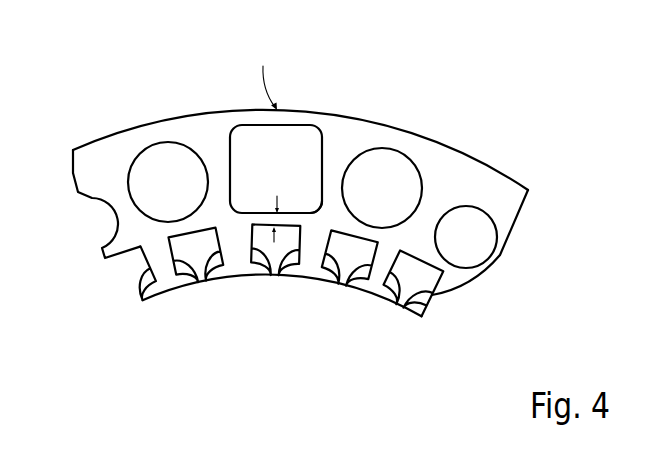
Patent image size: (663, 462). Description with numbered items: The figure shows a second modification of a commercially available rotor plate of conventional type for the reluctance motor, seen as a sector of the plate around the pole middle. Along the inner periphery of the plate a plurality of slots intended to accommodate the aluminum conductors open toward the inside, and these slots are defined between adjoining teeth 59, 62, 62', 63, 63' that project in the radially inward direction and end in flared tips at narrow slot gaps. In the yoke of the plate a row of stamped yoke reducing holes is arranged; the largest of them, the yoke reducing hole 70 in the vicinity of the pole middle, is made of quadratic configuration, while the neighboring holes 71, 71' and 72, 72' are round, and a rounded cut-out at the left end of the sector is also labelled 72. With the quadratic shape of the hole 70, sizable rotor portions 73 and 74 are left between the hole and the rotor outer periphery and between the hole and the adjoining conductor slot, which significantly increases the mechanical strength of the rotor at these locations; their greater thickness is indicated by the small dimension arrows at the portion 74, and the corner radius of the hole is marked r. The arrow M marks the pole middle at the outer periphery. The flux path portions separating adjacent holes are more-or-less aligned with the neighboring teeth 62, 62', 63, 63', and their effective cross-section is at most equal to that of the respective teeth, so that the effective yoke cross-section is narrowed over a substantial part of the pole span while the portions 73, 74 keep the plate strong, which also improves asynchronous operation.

The rotor tooth 59 is at (266, 250).
The rotor tooth 62 is at (196, 298).
The rotor tooth 62' is at (348, 298).
The rotor tooth 63 is at (144, 314).
The rotor tooth 63' is at (409, 319).
The yoke reducing hole 70 is at (248, 134).
The circular hole 71 is at (168, 140).
The circular hole 71' is at (405, 152).
The semicircular notch 72 is at (101, 166).
The circular hole 72' is at (478, 183).
The rotor portion 73 is at (291, 114).
The rotor portion 74 is at (320, 214).
The center line marker M is at (267, 77).
The corner radius r is at (292, 214).